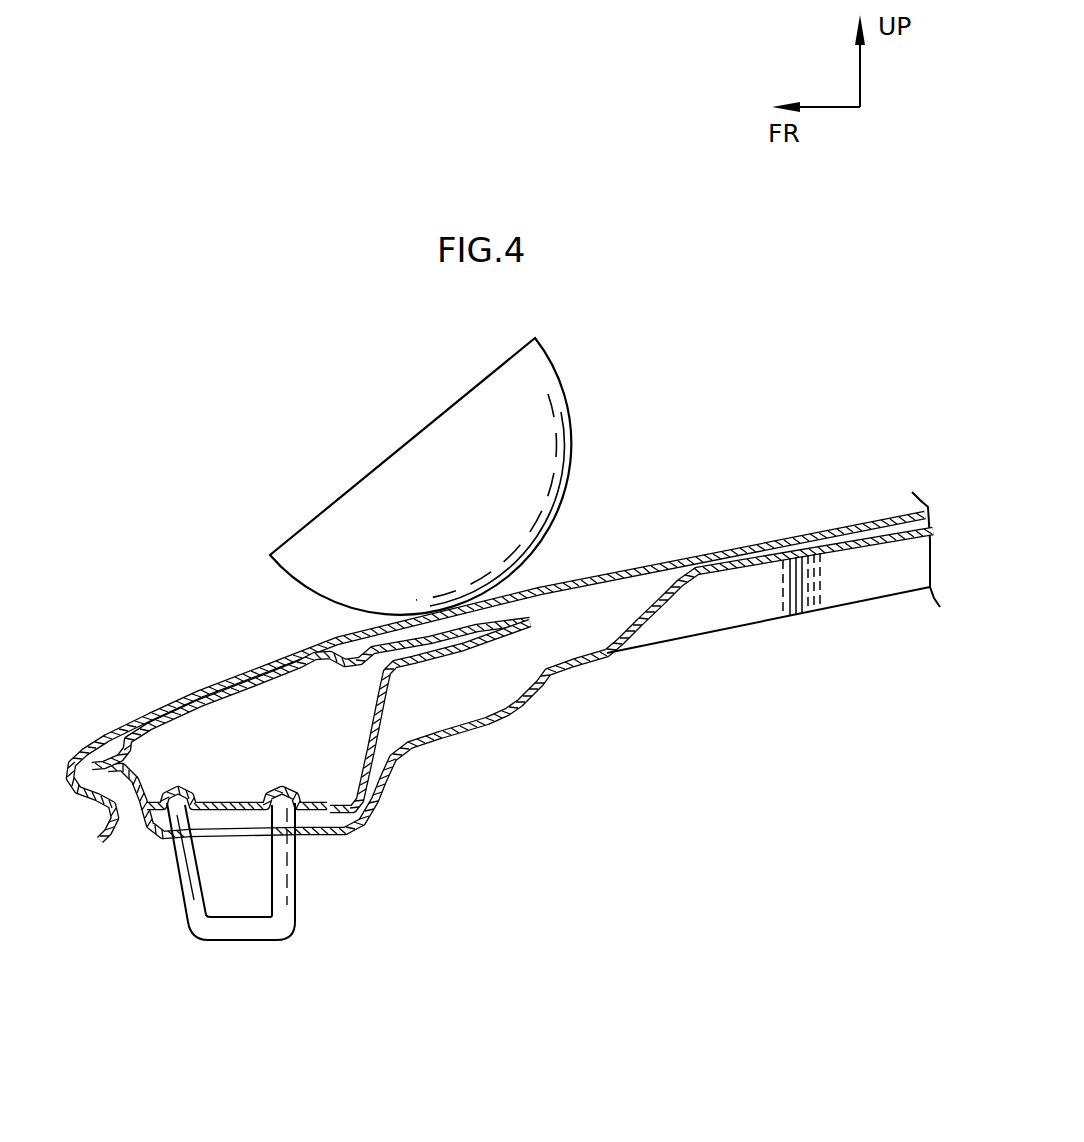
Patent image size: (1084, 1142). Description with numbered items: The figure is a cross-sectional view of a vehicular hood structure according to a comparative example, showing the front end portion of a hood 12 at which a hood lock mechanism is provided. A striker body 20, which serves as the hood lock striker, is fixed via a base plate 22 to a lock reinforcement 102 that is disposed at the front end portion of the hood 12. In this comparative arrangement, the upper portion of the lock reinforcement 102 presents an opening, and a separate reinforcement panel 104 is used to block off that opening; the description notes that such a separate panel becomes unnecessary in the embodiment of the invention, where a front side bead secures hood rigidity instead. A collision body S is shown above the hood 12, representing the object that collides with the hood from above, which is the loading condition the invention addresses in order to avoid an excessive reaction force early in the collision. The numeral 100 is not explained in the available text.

The hood 12 is at (807, 513).
The hood inner panel 100 is at (888, 508).
The lock reinforcement 102 is at (396, 716).
The reinforcement panel 104 is at (262, 686).
The striker body 20 is at (240, 932).
The base plate 22 is at (241, 800).
The collision body S is at (575, 420).